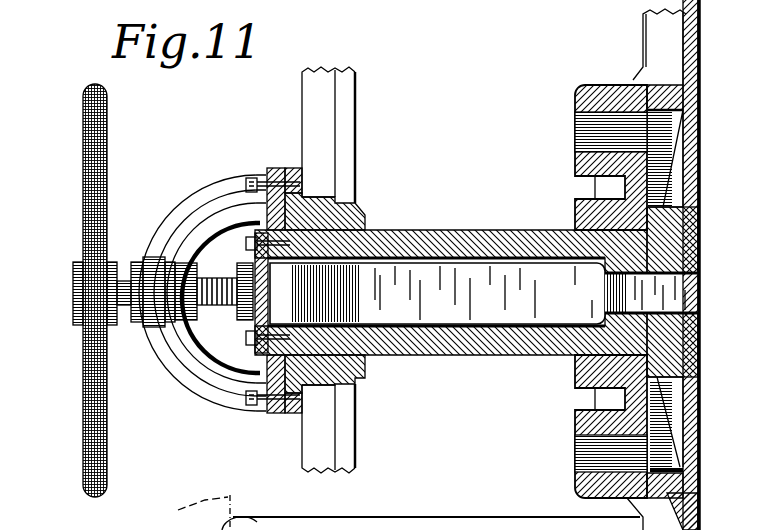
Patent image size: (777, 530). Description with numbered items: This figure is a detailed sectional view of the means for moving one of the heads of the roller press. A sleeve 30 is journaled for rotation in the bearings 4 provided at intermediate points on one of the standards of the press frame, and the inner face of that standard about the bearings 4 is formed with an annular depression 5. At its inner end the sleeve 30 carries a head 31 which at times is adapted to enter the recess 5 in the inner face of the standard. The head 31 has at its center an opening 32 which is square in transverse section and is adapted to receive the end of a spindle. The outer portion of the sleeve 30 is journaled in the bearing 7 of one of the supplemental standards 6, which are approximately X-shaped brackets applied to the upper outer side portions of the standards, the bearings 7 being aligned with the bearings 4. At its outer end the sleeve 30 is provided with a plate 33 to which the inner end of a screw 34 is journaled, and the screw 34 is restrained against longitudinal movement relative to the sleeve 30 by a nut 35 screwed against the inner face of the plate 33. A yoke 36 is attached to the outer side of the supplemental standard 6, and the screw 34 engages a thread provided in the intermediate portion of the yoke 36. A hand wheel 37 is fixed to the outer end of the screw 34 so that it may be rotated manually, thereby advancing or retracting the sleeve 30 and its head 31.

The bearings 4 is at (597, 357).
The annular depressions 5 is at (700, 500).
The supplemental standards 6 is at (347, 90).
The bearings 7 is at (340, 228).
The sleeve 30 is at (450, 352).
The head 31 is at (693, 447).
The opening 32 is at (623, 291).
The plate 33 is at (235, 335).
The screw 34 is at (217, 272).
The nut 35 is at (272, 301).
The yoke 36 is at (250, 403).
The hand wheel 37 is at (95, 211).